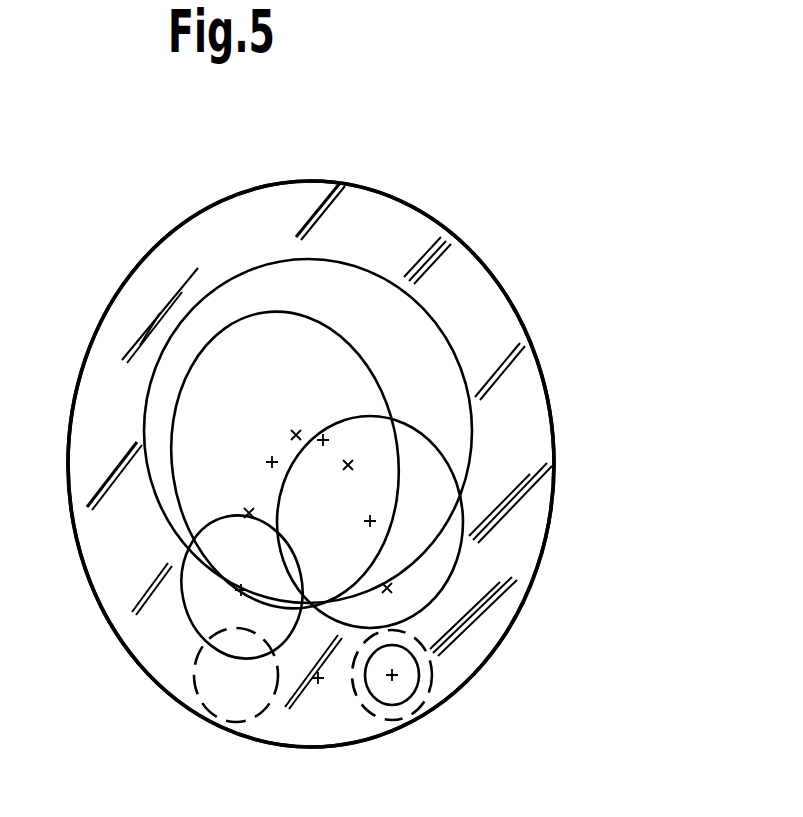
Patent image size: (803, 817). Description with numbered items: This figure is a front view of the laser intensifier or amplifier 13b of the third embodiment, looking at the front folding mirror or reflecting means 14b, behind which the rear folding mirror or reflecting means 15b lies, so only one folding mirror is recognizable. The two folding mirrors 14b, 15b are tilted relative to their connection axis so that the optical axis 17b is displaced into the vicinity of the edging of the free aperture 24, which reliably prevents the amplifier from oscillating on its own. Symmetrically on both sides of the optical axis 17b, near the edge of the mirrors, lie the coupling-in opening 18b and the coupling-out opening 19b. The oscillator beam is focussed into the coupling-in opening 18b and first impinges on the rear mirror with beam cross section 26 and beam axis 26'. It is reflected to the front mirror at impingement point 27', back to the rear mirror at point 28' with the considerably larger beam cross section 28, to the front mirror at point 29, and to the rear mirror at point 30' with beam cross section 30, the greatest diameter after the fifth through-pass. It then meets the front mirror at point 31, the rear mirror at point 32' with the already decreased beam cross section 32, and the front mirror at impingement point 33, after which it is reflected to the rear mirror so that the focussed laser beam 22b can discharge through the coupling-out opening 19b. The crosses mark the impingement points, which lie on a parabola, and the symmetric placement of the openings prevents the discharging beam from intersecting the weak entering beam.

The laser intensifier or amplifier 13b is at (554, 463).
The front folding mirror or reflecting means 14b is at (530, 348).
The rear folding mirror or reflecting means 15b is at (530, 348).
The free aperture 24 is at (413, 242).
The beam cross section 30 is at (308, 380).
The impingement point 30' is at (374, 387).
The beam cross section 28 is at (237, 449).
The impingement point 28' is at (236, 448).
The impingement point 29 is at (296, 430).
The impingement point 31 is at (350, 464).
The beam cross section 32 is at (444, 522).
The impingement point 32' is at (478, 562).
The impingement point 33 is at (389, 589).
The impingement point 27' is at (173, 526).
The beam cross section 26 is at (181, 587).
The beam axis 26' is at (157, 637).
The coupling-in opening 18b is at (205, 703).
The optical axis 17b is at (318, 680).
The coupling-out opening 19b is at (386, 722).
The laser beam 22b is at (407, 700).